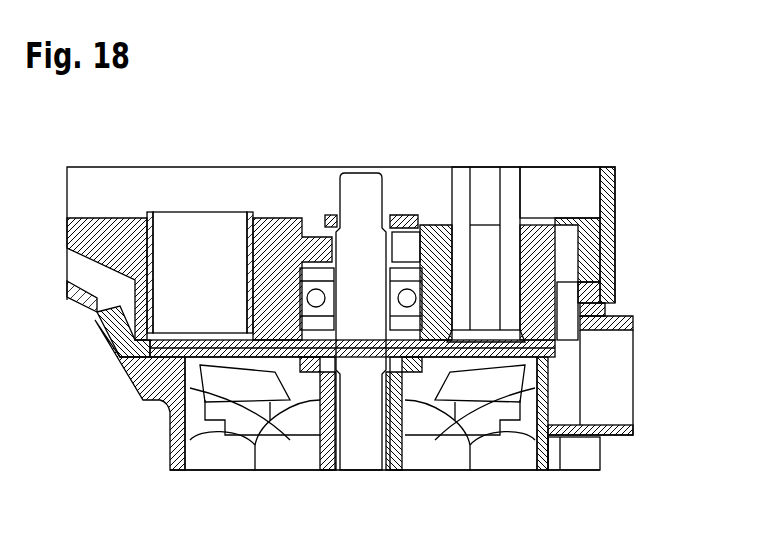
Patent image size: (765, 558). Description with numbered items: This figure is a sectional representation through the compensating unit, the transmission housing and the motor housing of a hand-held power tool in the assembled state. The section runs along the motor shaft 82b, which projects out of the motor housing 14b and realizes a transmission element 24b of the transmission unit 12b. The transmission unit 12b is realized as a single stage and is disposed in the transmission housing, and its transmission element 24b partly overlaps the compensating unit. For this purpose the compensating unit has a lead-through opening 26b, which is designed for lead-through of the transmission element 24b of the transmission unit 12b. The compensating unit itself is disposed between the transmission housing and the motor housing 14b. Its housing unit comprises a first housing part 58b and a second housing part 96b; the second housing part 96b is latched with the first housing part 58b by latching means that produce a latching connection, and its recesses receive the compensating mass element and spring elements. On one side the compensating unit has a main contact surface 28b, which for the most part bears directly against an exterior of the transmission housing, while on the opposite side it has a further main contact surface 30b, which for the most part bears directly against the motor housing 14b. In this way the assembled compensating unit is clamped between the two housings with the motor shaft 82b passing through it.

The transmission unit 12b is at (428, 218).
The transmission element 24b is at (368, 173).
The main contact surface 28b is at (108, 347).
The first housing part 58b is at (128, 357).
The further main contact surface 30b is at (132, 378).
The lead-through opening 26b is at (296, 472).
The motor shaft 82b is at (363, 453).
The second housing part 96b is at (590, 352).
The motor housing 14b is at (605, 418).